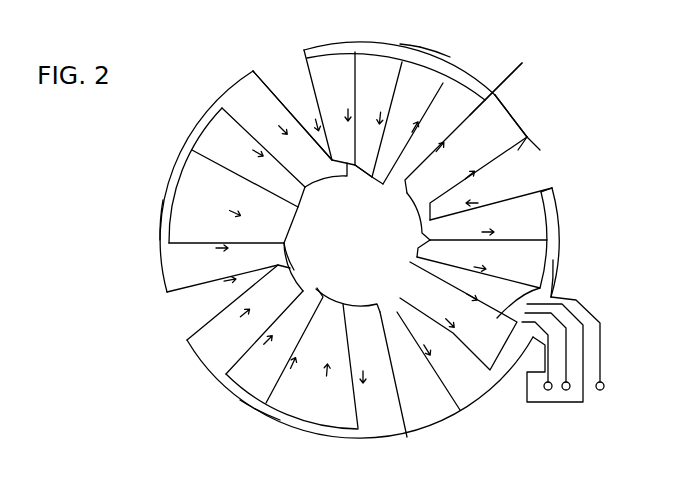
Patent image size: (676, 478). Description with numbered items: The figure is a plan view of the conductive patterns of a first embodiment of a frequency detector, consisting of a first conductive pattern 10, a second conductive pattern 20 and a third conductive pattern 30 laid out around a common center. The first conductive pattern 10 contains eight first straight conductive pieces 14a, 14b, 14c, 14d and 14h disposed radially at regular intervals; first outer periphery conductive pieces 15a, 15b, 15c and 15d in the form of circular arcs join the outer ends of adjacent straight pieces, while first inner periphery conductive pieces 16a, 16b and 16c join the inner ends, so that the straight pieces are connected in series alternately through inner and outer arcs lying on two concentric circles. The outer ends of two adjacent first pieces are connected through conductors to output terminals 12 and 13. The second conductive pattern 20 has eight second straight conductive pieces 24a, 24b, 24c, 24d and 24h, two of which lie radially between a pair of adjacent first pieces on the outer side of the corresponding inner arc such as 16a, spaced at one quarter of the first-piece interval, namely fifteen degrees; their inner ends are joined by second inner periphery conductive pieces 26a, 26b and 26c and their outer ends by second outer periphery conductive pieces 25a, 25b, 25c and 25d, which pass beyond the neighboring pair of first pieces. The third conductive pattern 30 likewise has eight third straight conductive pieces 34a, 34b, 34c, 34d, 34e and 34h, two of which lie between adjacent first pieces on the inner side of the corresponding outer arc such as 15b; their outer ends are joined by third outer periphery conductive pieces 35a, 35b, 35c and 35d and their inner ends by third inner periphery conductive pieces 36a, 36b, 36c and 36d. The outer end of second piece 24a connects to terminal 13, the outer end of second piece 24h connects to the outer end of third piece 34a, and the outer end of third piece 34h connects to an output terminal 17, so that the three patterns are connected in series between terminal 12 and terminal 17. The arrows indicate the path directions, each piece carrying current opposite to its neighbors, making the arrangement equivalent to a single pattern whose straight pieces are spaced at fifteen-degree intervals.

The first conductive pattern 10 is at (483, 120).
The output terminal 12 is at (548, 391).
The output terminal 13 is at (601, 390).
The first straight conductive piece 14a is at (514, 237).
The first straight conductive piece 14b is at (452, 150).
The first straight conductive piece 14c is at (357, 98).
The first straight conductive piece 14d is at (252, 133).
The first straight conductive piece 14h is at (484, 354).
The first outer periphery conductive piece 15a is at (544, 243).
The first outer periphery conductive piece 15b is at (488, 98).
The first outer periphery conductive piece 15c is at (207, 124).
The first outer periphery conductive piece 15d is at (238, 394).
The first inner periphery conductive piece 16a is at (405, 216).
The first inner periphery conductive piece 16b is at (346, 184).
The first inner periphery conductive piece 16c is at (292, 243).
The output terminal 17 is at (566, 390).
The second conductive pattern 20 is at (535, 128).
The second straight conductive piece 24a is at (543, 186).
The second straight conductive piece 24b is at (518, 150).
The second straight conductive piece 24c is at (316, 96).
The second straight conductive piece 24d is at (258, 77).
The second straight conductive piece 24h is at (432, 370).
The second outer periphery conductive piece 25a is at (557, 218).
The second outer periphery conductive piece 25b is at (370, 46).
The second outer periphery conductive piece 25c is at (165, 212).
The second outer periphery conductive piece 25d is at (203, 368).
The second inner periphery conductive piece 26a is at (455, 200).
The second inner periphery conductive piece 26b is at (318, 148).
The second inner periphery conductive piece 26c is at (270, 272).
The third conductive pattern 30 is at (445, 82).
The third straight conductive piece 34a is at (500, 283).
The third straight conductive piece 34b is at (516, 83).
The third straight conductive piece 34c is at (410, 66).
The third straight conductive piece 34d is at (238, 171).
The third straight conductive piece 34e is at (237, 212).
The third straight conductive piece 34h is at (552, 297).
The third outer periphery conductive piece 35a is at (548, 278).
The third outer periphery conductive piece 35b is at (410, 48).
The third outer periphery conductive piece 35c is at (178, 183).
The third outer periphery conductive piece 35d is at (266, 414).
The third inner periphery conductive piece 36a is at (418, 255).
The third inner periphery conductive piece 36b is at (356, 181).
The third inner periphery conductive piece 36c is at (316, 289).
The third inner periphery conductive piece 36d is at (392, 288).